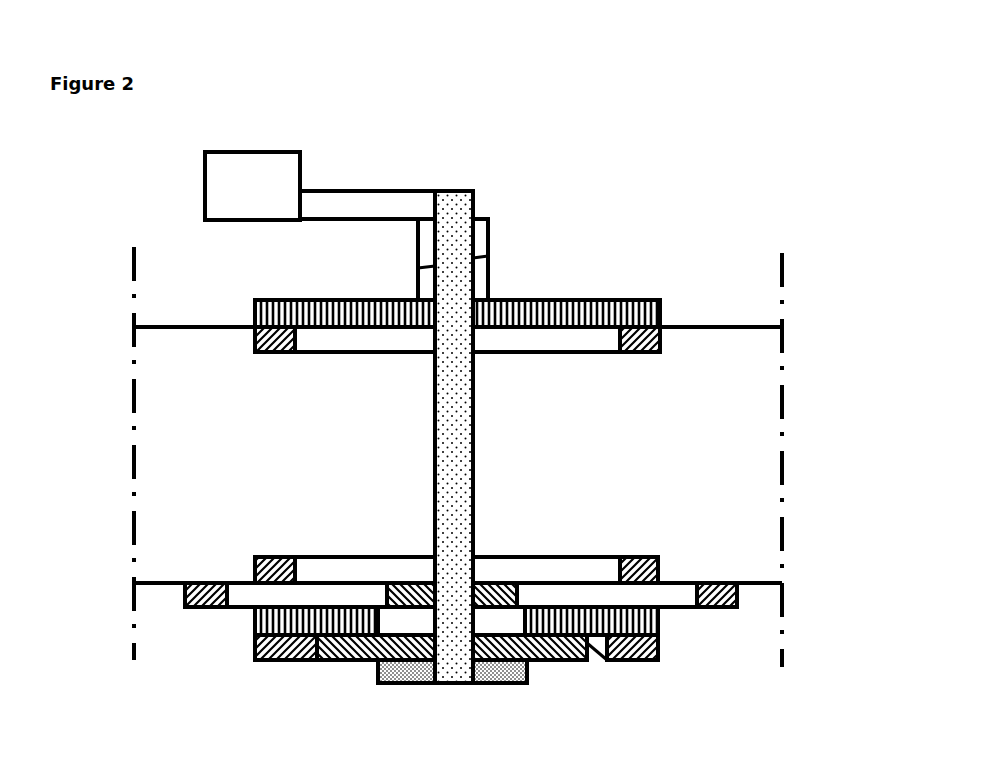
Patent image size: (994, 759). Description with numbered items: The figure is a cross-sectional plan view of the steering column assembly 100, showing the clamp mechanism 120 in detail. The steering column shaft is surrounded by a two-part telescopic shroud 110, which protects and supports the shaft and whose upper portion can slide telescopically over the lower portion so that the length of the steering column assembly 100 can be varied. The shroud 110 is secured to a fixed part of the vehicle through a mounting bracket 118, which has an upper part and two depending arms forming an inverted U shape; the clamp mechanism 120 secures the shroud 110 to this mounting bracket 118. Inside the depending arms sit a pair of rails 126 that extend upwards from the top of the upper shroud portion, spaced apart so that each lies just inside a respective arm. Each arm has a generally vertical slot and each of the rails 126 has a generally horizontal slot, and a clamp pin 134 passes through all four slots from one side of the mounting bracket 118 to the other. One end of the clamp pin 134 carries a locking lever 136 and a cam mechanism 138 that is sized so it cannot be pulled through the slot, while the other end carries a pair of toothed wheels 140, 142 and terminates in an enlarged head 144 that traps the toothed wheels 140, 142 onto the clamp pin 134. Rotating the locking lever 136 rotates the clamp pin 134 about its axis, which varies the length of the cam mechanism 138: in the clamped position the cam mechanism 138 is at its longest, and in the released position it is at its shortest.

The steering column assembly 100 is at (662, 143).
The shroud 110 is at (723, 313).
The mounting bracket 118 is at (537, 287).
The clamp mechanism 120 is at (398, 175).
The rails 126 is at (575, 300).
The clamp pin 134 is at (463, 192).
The locking lever 136 is at (205, 162).
The cam mechanism 138 is at (418, 252).
The toothed wheel 140 is at (343, 660).
The toothed wheel 142 is at (387, 598).
The enlarged head 144 is at (378, 683).